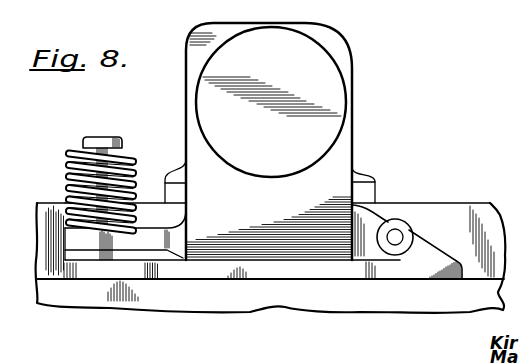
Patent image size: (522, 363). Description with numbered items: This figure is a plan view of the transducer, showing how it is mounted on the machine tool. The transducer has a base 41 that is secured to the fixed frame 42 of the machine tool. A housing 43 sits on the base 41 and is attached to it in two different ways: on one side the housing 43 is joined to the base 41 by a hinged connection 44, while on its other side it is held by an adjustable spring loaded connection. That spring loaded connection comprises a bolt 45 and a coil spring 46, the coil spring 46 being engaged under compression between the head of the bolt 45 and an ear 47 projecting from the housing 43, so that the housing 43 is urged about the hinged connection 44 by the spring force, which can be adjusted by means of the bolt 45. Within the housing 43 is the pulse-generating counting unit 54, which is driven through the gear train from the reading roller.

The base 41 is at (299, 281).
The fixed frame 42 is at (183, 304).
The housing 43 is at (352, 146).
The hinged connection 44 is at (386, 244).
The bolt 45 is at (106, 124).
The coil spring 46 is at (67, 172).
The ear 47 is at (167, 212).
The pulse-generating counting unit 54 is at (271, 102).